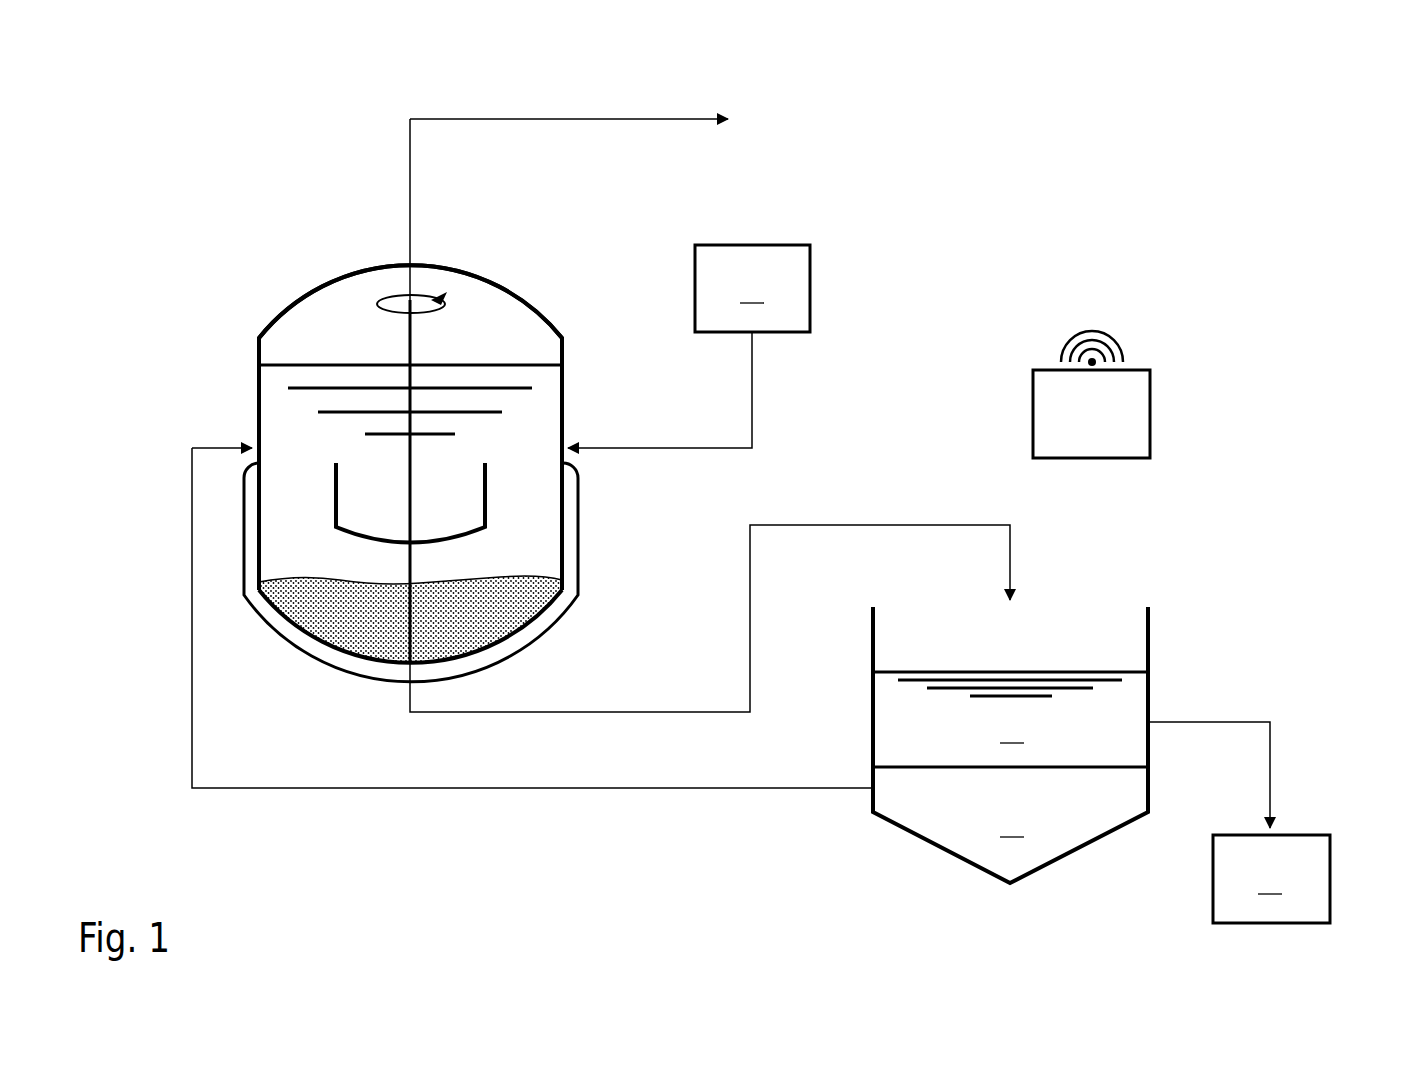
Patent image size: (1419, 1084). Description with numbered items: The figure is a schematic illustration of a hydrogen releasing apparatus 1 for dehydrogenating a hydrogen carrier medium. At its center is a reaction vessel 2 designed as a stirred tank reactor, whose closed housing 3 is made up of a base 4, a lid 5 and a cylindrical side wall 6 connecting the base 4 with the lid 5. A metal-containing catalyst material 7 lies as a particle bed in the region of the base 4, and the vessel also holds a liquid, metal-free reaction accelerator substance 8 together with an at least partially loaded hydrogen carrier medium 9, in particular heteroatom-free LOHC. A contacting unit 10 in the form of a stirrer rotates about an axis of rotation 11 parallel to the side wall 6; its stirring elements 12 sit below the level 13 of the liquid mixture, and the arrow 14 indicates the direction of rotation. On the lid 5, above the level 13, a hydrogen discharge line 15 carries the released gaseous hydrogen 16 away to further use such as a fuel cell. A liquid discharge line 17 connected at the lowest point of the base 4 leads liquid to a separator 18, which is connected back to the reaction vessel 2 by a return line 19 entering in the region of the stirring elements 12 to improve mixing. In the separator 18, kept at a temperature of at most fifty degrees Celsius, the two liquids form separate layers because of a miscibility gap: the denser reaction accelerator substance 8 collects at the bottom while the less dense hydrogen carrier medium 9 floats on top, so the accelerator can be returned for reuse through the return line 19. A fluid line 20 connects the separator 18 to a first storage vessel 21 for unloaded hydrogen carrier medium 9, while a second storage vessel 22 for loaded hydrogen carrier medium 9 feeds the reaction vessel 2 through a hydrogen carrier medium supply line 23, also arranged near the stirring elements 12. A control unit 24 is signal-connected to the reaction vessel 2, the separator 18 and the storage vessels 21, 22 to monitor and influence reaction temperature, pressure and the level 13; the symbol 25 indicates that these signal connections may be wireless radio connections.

The hydrogen releasing apparatus 1 is at (1322, 165).
The reaction vessel 2 is at (250, 320).
The housing 3 is at (259, 435).
The base 4 is at (293, 628).
The lid 5 is at (340, 277).
The side wall 6 is at (270, 388).
The catalyst material 7 is at (300, 595).
The reaction accelerator substance 8 is at (505, 472).
The hydrogen carrier medium 9 is at (1010, 708).
The contacting unit 10 is at (320, 499).
The axis of rotation 11 is at (410, 347).
The stirring elements 12 is at (336, 488).
The level 13 is at (485, 362).
The arrow 14 is at (400, 293).
The hydrogen discharge line 15 is at (532, 119).
The gaseous hydrogen 16 is at (755, 119).
The liquid discharge line 17 is at (617, 712).
The separator 18 is at (1148, 665).
The return line 19 is at (417, 790).
The fluid line 20 is at (1270, 760).
The first storage vessel 21 is at (1313, 880).
The second storage vessel 22 is at (800, 295).
The hydrogen carrier medium supply line 23 is at (752, 390).
The control unit 24 is at (1045, 416).
The symbol 25 is at (1052, 347).